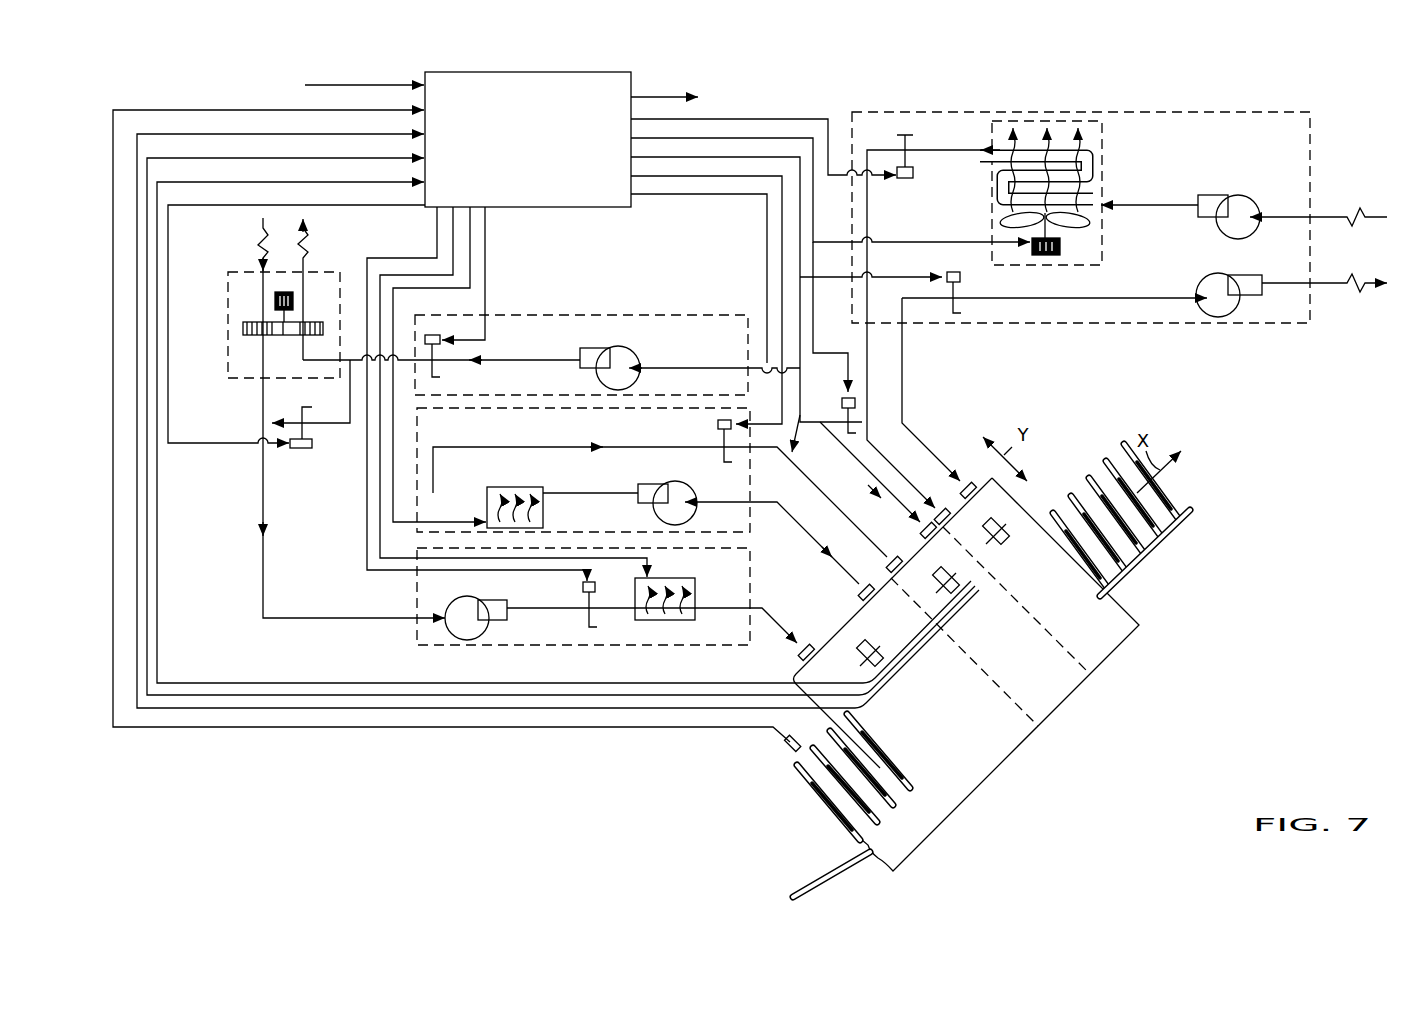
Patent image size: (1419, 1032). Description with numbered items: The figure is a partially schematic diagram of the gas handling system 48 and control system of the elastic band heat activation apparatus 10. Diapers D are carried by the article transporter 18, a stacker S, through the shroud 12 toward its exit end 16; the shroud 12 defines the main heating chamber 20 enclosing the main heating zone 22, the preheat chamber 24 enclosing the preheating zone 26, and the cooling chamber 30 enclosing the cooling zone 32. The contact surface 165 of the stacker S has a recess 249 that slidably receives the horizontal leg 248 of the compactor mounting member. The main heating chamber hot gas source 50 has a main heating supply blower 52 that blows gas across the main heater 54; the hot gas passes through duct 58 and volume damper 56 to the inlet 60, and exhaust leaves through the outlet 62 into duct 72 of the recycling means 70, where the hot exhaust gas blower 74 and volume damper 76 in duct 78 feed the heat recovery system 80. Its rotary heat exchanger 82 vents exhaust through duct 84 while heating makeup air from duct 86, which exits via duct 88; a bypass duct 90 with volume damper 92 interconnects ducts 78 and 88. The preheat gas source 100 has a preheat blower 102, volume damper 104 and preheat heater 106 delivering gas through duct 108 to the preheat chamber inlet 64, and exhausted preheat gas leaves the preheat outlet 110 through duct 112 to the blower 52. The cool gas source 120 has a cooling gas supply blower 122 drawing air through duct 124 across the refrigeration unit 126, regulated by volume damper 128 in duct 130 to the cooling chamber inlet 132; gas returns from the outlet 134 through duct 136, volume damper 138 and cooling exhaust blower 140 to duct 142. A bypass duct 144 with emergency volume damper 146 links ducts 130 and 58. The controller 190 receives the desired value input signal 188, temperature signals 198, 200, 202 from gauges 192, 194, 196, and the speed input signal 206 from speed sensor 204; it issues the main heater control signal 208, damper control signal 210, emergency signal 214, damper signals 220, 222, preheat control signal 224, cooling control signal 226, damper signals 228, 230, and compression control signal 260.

The elastic band heat activation apparatus 10 is at (486, 771).
The shroud 12 is at (823, 669).
The exit end 16 is at (1027, 503).
The article transporter 18 is at (808, 813).
The main heating chamber 20 is at (1085, 675).
The main heating zone 22 is at (992, 610).
The preheat chamber 24 is at (983, 790).
The preheating zone 26 is at (903, 711).
The cooling chamber 30 is at (1140, 622).
The cooling zone 32 is at (1030, 572).
The gas handling system 48 is at (631, 819).
The main heating chamber hot gas source 50 is at (745, 523).
The main heating supply blower 52 is at (680, 495).
The main heater 54 is at (520, 487).
The volume damper 56 is at (716, 425).
The duct 58 is at (830, 492).
The main heating chamber inlet 60 is at (905, 552).
The main heating chamber outlet 62 is at (926, 520).
The preheat chamber inlet 64 is at (811, 641).
The recycling means 70 is at (668, 331).
The duct 72 is at (791, 377).
The hot exhaust gas blower 74 is at (618, 356).
The volume damper 76 is at (432, 334).
The duct 78 is at (543, 360).
The heat recovery system 80 is at (240, 302).
The air-to-air rotary heat exchanger 82 is at (313, 324).
The duct 84 is at (306, 262).
The duct 86 is at (263, 284).
The duct 88 is at (262, 392).
The bypass duct 90 is at (320, 424).
The volume damper 92 is at (300, 449).
The preheat gas source 100 is at (655, 634).
The preheat blower 102 is at (472, 632).
The volume damper 104 is at (582, 587).
The preheat heater 106 is at (692, 592).
The duct 108 is at (792, 615).
The preheat outlet 110 is at (872, 576).
The duct 112 is at (790, 508).
The cool gas source 120 is at (1255, 317).
The cooling gas supply blower 122 is at (1243, 208).
The duct 124 is at (1311, 217).
The refrigeration unit 126 is at (1094, 133).
The volume damper 128 is at (914, 172).
The duct 130 is at (873, 369).
The cooling chamber inlet 132 is at (944, 505).
The cooling chamber outlet 134 is at (973, 476).
The duct 136 is at (904, 396).
The volume damper 138 is at (961, 278).
The cooling exhaust blower 140 is at (1218, 310).
The duct 142 is at (1312, 284).
The bypass duct 144 is at (799, 444).
The volume damper 146 is at (848, 388).
The contact surface 165 is at (810, 880).
The desired value input signal 188 is at (366, 84).
The controller 190 is at (528, 139).
The temperature gauge 192 is at (878, 642).
The temperature gauge 194 is at (941, 568).
The temperature gauge 196 is at (989, 522).
The preheat temperature signal 198 is at (218, 684).
The main heating temperature signal 200 is at (262, 696).
The cooling temperature signal 202 is at (310, 709).
The speed sensor 204 is at (784, 745).
The speed input signal 206 is at (371, 728).
The main heater control signal 208 is at (390, 494).
The damper control signal 210 is at (654, 195).
The overheat emergency damper signal 214 is at (697, 178).
The damper control signal 220 is at (240, 444).
The damper control signal 222 is at (400, 571).
The preheat temperature control signal 224 is at (380, 530).
The cooling zone temperature control signal 226 is at (767, 137).
The damper control signal 228 is at (712, 118).
The damper control signal 230 is at (754, 158).
The horizontal leg 248 is at (1023, 690).
The recess 249 is at (1000, 718).
The compression control signal 260 is at (655, 96).
The stacker S is at (1188, 556).
The diaper D is at (818, 785).